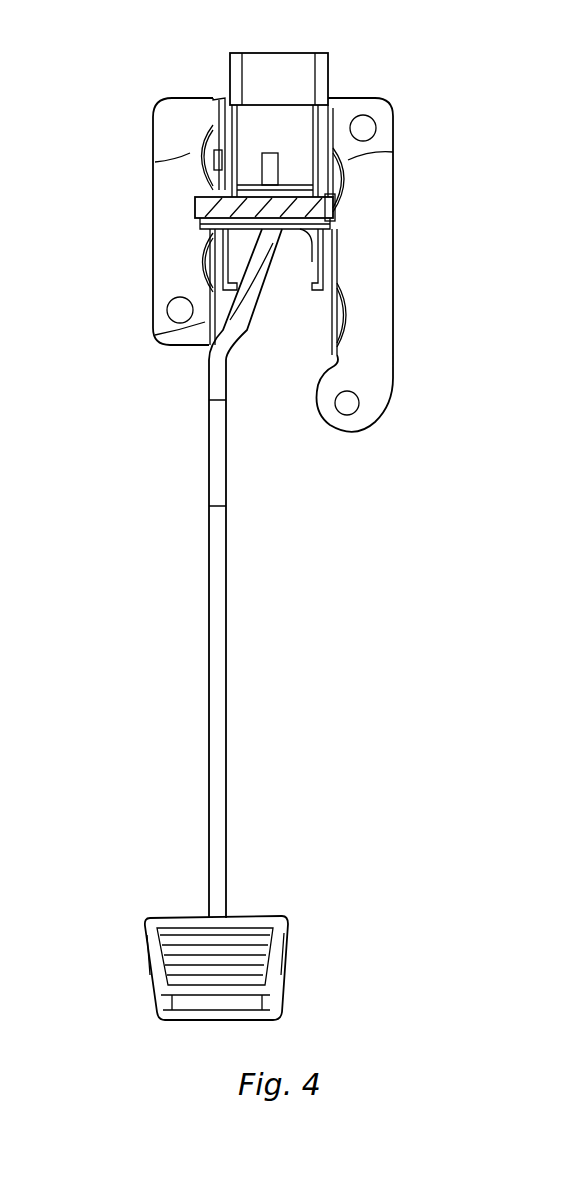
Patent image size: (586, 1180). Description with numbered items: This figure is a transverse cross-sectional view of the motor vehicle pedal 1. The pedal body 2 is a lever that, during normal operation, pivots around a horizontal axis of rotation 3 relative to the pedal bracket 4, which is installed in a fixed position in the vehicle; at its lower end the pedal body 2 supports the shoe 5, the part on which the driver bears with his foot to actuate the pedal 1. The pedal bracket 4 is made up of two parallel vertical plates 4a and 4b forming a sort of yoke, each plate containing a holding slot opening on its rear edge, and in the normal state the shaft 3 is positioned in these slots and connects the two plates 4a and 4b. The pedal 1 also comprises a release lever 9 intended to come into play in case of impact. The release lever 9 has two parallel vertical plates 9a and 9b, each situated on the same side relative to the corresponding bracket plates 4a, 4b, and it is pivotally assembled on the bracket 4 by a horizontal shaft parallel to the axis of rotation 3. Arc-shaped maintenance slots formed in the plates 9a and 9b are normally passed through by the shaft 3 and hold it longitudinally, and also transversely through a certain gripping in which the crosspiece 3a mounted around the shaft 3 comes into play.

The motor vehicle pedal 1 is at (130, 578).
The pedal body 2 is at (218, 781).
The axis of rotation 3 is at (197, 207).
The crosspiece 3a is at (302, 232).
The pedal bracket 4 is at (400, 318).
The vertical plate 4a is at (220, 256).
The vertical plate 4b is at (318, 255).
The shoe 5 is at (275, 957).
The release lever 9 is at (333, 55).
The vertical plate 9a is at (210, 132).
The vertical plate 9b is at (336, 170).